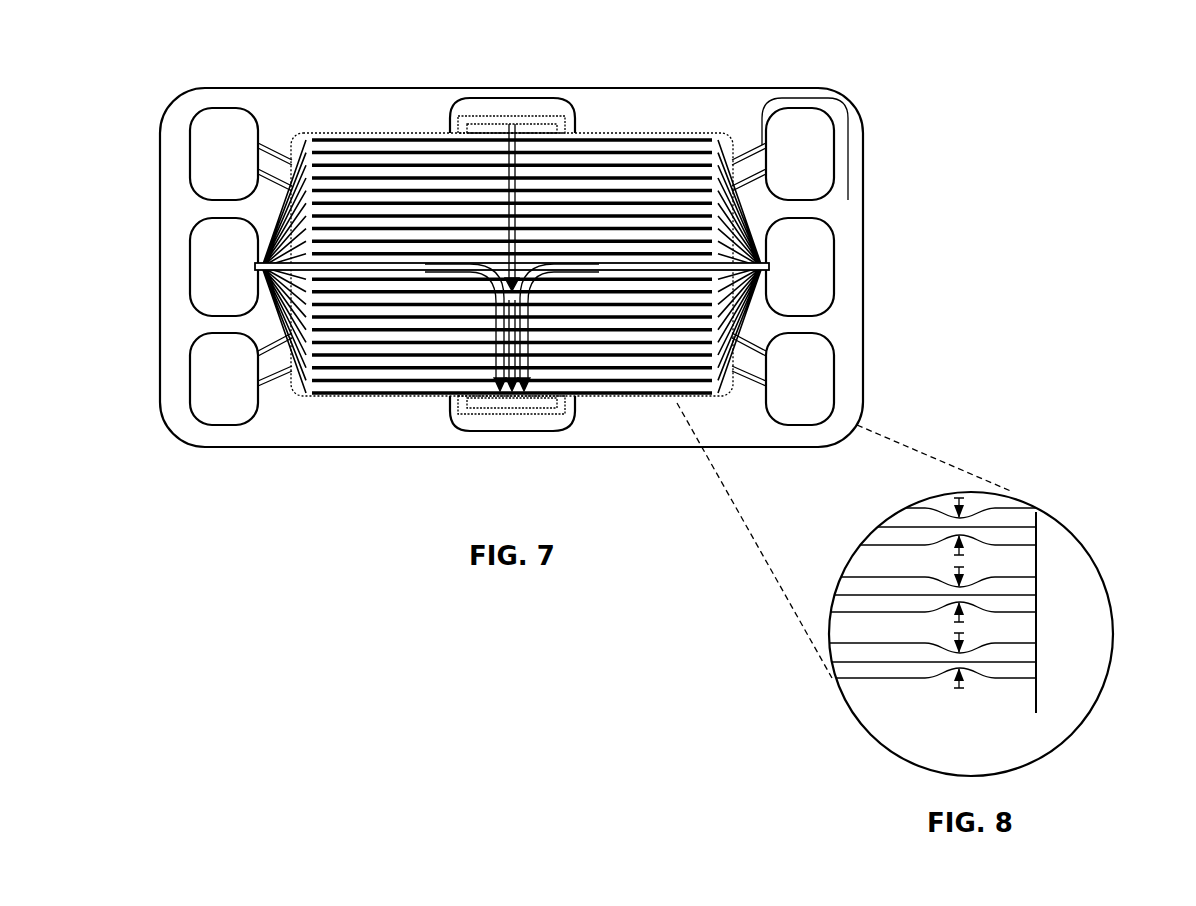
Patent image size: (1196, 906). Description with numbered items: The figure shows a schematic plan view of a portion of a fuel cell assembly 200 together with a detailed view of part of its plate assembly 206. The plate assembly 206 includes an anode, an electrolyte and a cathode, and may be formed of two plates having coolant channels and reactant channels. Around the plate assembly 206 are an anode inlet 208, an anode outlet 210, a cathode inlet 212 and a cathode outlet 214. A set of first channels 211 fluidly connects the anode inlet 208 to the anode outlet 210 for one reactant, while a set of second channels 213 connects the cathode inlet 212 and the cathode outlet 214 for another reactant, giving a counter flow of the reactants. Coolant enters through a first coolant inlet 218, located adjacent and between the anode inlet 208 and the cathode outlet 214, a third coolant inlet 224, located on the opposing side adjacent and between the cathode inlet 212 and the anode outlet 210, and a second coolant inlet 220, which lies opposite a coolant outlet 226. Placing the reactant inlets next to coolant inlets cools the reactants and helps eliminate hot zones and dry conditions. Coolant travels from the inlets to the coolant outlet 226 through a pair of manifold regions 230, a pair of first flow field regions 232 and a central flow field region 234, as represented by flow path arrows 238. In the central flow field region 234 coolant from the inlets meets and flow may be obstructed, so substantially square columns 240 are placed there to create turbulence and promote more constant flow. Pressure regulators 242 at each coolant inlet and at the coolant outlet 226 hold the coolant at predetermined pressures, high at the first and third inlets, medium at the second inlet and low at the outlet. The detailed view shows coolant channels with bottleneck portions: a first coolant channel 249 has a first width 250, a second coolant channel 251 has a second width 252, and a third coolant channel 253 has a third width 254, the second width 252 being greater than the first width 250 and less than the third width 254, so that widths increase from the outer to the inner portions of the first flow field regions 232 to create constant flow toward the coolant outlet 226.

In FIG. 7, the fuel cell assembly 200 is at (726, 44).
In FIG. 7, the plate assembly 206 is at (769, 86).
In FIG. 7, the anode inlet 208 is at (205, 168).
In FIG. 7, the anode outlet 210 is at (781, 391).
In FIG. 7, the set of first channels 211 is at (277, 143).
In FIG. 7, the cathode inlet 212 is at (781, 168).
In FIG. 7, the set of second channels 213 is at (760, 147).
In FIG. 7, the cathode outlet 214 is at (205, 391).
In FIG. 7, the first coolant inlet 218 is at (190, 266).
In FIG. 7, the second coolant inlet 220 is at (522, 98).
In FIG. 7, the third coolant inlet 224 is at (790, 241).
In FIG. 7, the coolant outlet 226 is at (512, 434).
In FIG. 7, the manifold regions 230 is at (269, 406).
In FIG. 7, the first flow field regions 232 is at (339, 131).
In FIG. 7, the central flow field region 234 is at (473, 128).
In FIG. 7, the flow path arrows 238 is at (375, 268).
In FIG. 7, the columns 240 is at (512, 137).
In FIG. 7, the pressure regulators 242 is at (228, 245).
In FIG. 8, the first coolant channel 249 is at (915, 685).
In FIG. 8, the first width 250 is at (966, 640).
In FIG. 8, the second coolant channel 251 is at (872, 616).
In FIG. 8, the second width 252 is at (968, 568).
In FIG. 8, the third coolant channel 253 is at (902, 548).
In FIG. 8, the third width 254 is at (965, 500).